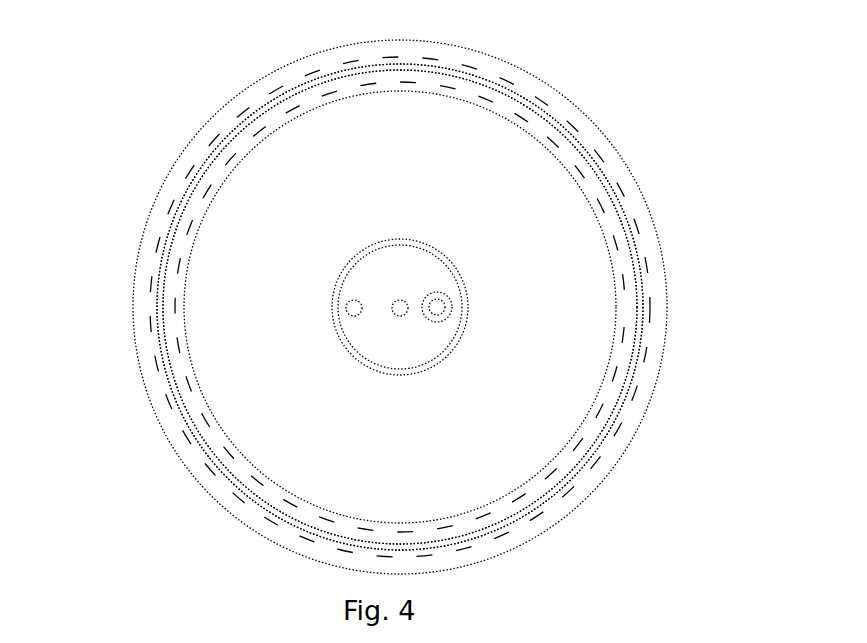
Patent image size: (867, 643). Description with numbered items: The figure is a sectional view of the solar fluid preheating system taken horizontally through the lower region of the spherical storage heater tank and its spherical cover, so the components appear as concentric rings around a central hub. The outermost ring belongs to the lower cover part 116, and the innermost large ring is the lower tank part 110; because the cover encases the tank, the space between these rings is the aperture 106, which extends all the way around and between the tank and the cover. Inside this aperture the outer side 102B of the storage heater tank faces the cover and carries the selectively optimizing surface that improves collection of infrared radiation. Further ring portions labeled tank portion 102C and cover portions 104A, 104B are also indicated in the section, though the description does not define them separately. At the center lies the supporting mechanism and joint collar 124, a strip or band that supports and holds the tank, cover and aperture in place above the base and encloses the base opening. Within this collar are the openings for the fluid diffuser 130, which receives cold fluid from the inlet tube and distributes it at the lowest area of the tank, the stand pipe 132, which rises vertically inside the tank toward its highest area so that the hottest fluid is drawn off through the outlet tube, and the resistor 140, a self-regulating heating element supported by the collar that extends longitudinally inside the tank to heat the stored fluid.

The outer side of storage heater tank 102B is at (528, 480).
The rim region portion 102C is at (544, 497).
The compressible layer portion 104A is at (528, 104).
The outer compressible layer portion 104B is at (547, 81).
The aperture 106 is at (577, 328).
The lower tank part 110 is at (165, 327).
The lower cover part 116 is at (151, 235).
The supporting mechanism and joint collar 124 is at (375, 347).
The fluid diffuser 130 is at (447, 300).
The stand pipe 132 is at (366, 297).
The resistor 140 is at (411, 315).